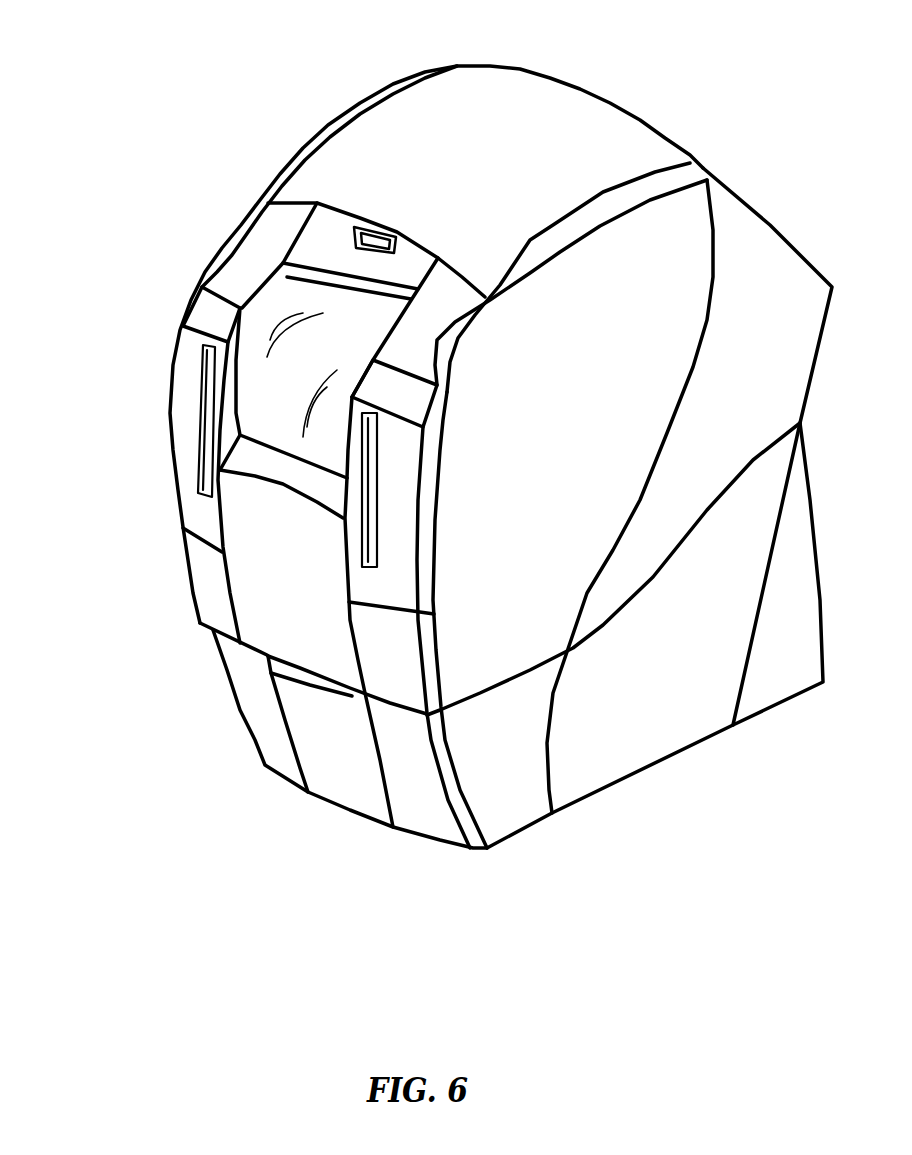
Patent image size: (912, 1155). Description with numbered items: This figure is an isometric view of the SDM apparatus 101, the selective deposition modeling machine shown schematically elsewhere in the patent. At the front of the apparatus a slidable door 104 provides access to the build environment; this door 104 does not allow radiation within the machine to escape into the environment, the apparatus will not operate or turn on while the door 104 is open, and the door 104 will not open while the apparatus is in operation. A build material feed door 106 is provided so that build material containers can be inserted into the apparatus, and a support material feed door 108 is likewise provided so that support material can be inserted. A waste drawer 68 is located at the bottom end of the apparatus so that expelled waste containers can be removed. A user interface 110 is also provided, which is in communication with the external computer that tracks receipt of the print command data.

The SDM apparatus 101 is at (196, 112).
The user interface 110 is at (214, 304).
The slidable door 104 is at (190, 393).
The build material feed door 106 is at (259, 429).
The support material feed door 108 is at (251, 604).
The waste drawer 68 is at (260, 731).